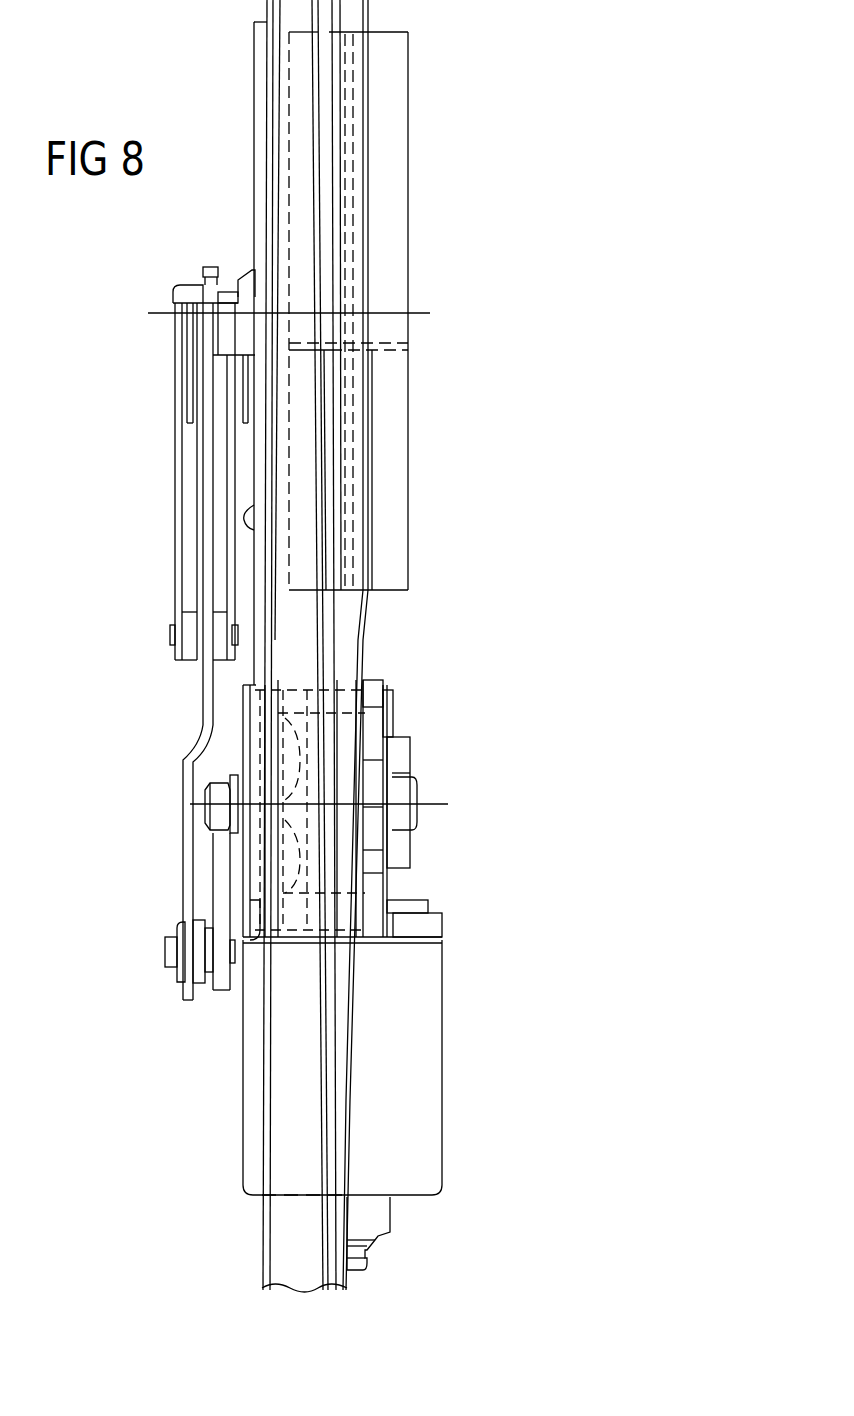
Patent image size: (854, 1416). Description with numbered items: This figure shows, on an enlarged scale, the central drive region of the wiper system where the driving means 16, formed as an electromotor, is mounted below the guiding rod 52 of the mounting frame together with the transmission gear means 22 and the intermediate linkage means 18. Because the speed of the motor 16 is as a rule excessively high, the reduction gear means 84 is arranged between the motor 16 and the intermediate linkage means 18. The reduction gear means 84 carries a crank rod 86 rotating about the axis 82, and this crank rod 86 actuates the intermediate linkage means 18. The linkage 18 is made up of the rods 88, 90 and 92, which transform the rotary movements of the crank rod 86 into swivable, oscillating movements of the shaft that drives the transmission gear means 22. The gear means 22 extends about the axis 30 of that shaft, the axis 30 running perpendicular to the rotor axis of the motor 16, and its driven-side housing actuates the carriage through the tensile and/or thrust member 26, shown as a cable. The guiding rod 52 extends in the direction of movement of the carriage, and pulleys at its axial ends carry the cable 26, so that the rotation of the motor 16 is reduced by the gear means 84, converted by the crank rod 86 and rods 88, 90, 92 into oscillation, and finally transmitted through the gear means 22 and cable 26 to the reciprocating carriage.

The transmission gear means 22 is at (472, 88).
The axis of the shaft 30 is at (430, 313).
The intermediate linkage means 18 is at (145, 496).
The rod 92 is at (178, 475).
The rod 90 is at (235, 515).
The tensile and/or thrust member 26 is at (362, 636).
The reduction gear means 84 is at (440, 748).
The axis 82 is at (438, 803).
The rod 88 is at (190, 795).
The crank rod 86 is at (222, 886).
The driving means 16 is at (430, 1040).
The guiding rod 52 is at (295, 1233).